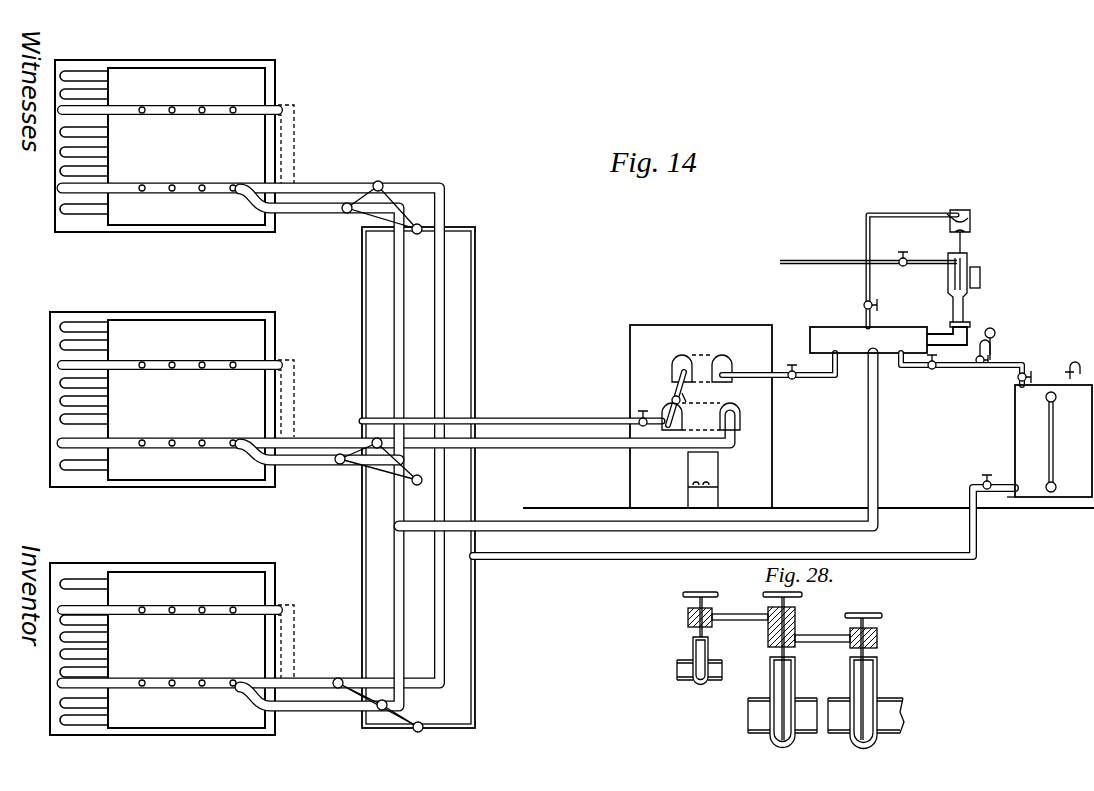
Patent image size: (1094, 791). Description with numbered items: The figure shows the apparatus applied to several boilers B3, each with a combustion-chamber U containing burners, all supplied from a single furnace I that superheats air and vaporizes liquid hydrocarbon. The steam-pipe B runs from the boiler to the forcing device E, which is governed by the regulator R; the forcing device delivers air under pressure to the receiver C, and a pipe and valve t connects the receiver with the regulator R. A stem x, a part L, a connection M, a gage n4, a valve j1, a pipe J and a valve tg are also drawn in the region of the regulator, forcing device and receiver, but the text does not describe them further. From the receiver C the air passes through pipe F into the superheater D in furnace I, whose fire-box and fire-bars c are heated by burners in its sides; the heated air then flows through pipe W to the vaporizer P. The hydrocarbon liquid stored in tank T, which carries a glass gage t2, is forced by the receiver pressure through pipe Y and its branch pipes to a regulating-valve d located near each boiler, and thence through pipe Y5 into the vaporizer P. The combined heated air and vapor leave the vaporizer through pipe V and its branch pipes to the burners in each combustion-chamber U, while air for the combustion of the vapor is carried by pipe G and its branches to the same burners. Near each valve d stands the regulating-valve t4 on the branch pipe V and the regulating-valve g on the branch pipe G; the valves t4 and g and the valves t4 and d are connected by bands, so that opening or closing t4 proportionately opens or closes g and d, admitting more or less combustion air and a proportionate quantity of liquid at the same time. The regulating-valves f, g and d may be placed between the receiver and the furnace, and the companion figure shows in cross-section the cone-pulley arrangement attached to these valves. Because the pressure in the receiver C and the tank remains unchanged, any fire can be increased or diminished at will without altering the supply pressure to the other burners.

In FIG. 14, the boilers B3 is at (69, 398).
In FIG. 14, the combustion-chamber U is at (162, 397).
In FIG. 14, the pipe V is at (405, 427).
In FIG. 14, the regulating-valve t4 is at (375, 447).
In FIG. 14, the regulating-valve g is at (361, 463).
In FIG. 28, the regulating-valve g is at (866, 681).
In FIG. 14, the regulating-valve d is at (420, 486).
In FIG. 28, the regulating-valve d is at (722, 638).
In FIG. 14, the pipe G is at (564, 457).
In FIG. 14, the pipe Y is at (537, 477).
In FIG. 14, the pipe Y5 is at (677, 489).
In FIG. 14, the pipe and valve t is at (763, 315).
In FIG. 14, the furnace I is at (701, 408).
In FIG. 14, the superheater D is at (702, 357).
In FIG. 14, the pipe W is at (668, 398).
In FIG. 14, the vaporizer P is at (701, 410).
In FIG. 14, the fire-box and fire-bars c is at (703, 480).
In FIG. 14, the pipe F is at (778, 376).
In FIG. 14, the steam-pipe B is at (868, 256).
In FIG. 14, the regulator R is at (965, 222).
In FIG. 14, the stem x is at (964, 242).
In FIG. 14, the lever L is at (982, 277).
In FIG. 14, the forcing device E is at (963, 290).
In FIG. 14, the receiver C is at (868, 340).
In FIG. 14, the connection M is at (947, 336).
In FIG. 14, the gauge n4 is at (999, 341).
In FIG. 14, the valve j1 is at (931, 370).
In FIG. 14, the pipe J is at (961, 369).
In FIG. 14, the valve tg is at (1049, 372).
In FIG. 14, the tank T is at (1037, 441).
In FIG. 14, the gauge glass t2 is at (1043, 442).
In FIG. 28, the regulating-valve f is at (799, 670).